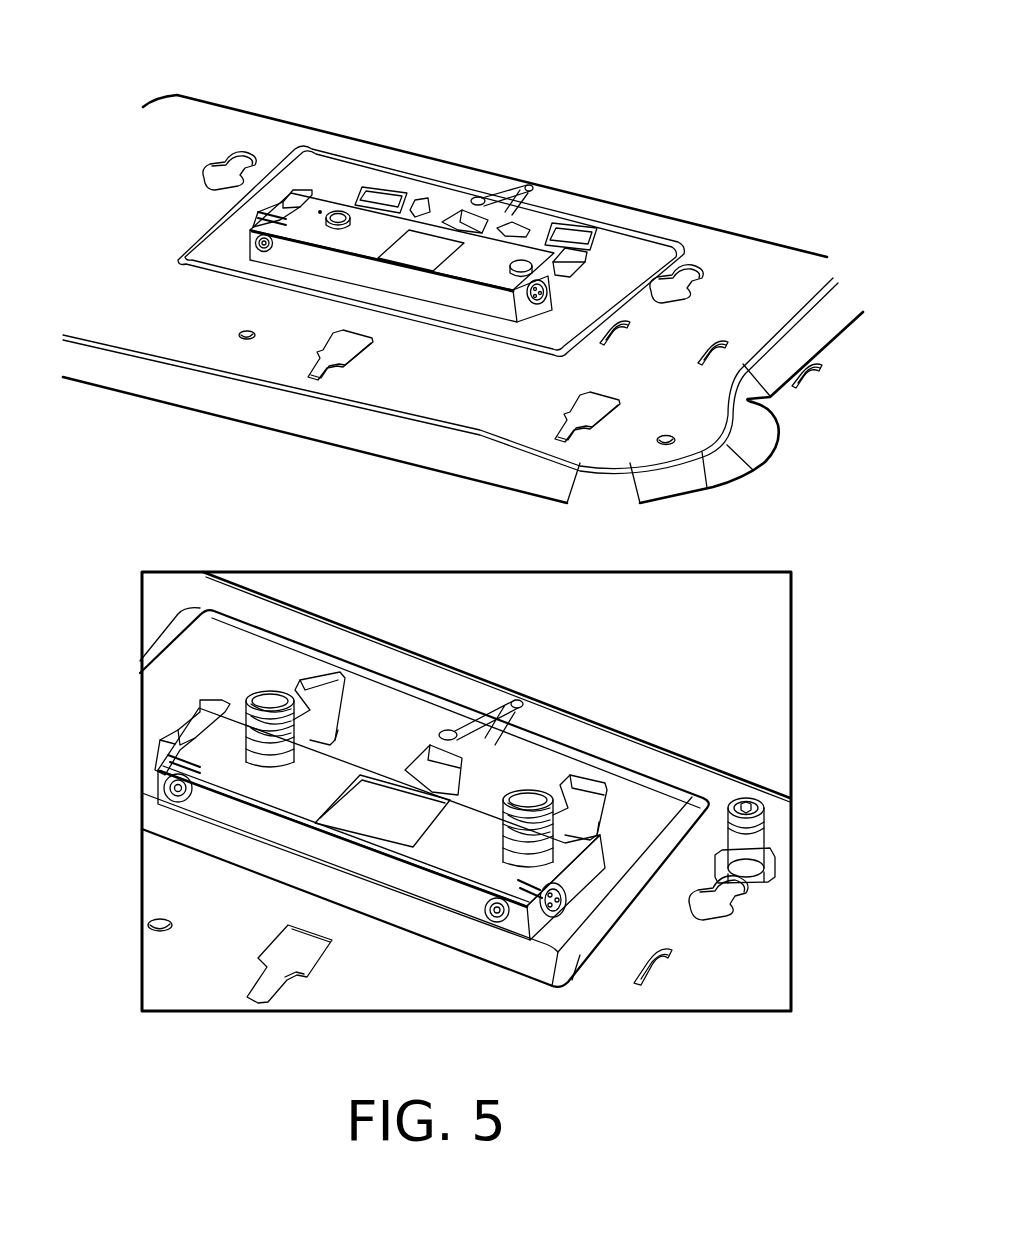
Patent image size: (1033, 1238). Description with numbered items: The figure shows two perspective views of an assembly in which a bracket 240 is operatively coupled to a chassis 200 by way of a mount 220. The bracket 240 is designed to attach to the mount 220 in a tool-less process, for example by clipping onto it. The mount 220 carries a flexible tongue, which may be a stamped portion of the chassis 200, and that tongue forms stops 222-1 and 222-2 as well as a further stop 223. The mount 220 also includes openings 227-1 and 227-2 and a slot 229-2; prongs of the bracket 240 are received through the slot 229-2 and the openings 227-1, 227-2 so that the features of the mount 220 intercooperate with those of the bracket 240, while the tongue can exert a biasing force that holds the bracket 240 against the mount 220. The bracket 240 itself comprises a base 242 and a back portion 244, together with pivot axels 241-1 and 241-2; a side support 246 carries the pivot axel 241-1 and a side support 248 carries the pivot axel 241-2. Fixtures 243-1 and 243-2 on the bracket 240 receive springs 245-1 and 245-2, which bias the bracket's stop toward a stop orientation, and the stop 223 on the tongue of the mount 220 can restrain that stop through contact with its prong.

The chassis 200 is at (158, 307).
The mount 220 is at (445, 488).
The stop 222-1 is at (418, 200).
The stop 222-2 is at (500, 225).
The stop 223 is at (462, 212).
The opening 227-1 is at (327, 675).
The opening 227-2 is at (605, 785).
The slot 229-2 is at (587, 893).
The bracket 240 is at (606, 144).
The pivot axel 241-1 is at (245, 223).
The pivot axel 241-2 is at (540, 305).
The base 242 is at (338, 208).
The fixture 243-1 is at (370, 195).
The fixture 243-2 is at (562, 230).
The back portion 244 is at (320, 260).
The spring 245-1 is at (295, 692).
The spring 245-2 is at (535, 795).
The side support 246 is at (295, 195).
The side support 248 is at (573, 263).